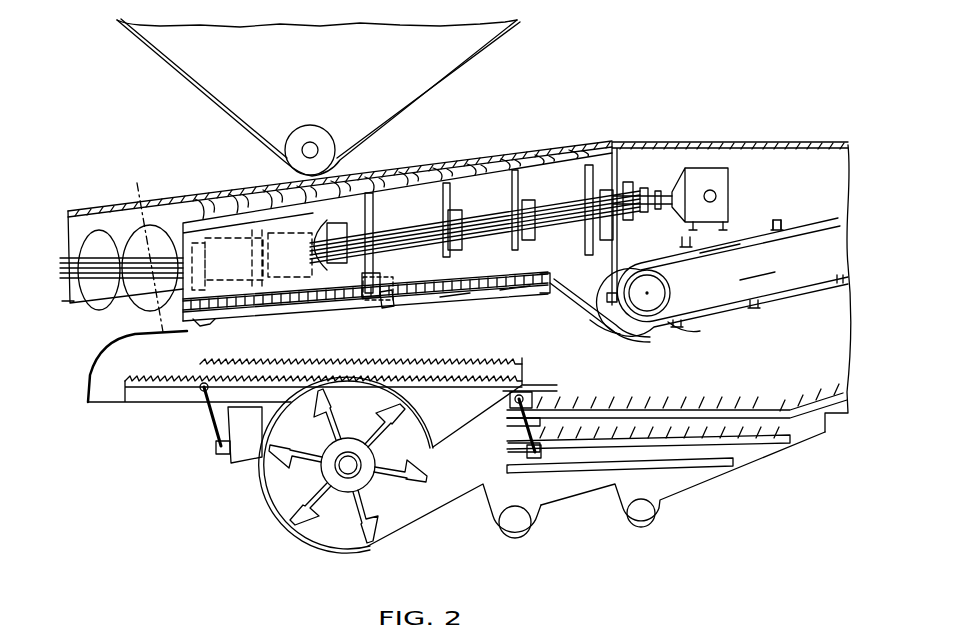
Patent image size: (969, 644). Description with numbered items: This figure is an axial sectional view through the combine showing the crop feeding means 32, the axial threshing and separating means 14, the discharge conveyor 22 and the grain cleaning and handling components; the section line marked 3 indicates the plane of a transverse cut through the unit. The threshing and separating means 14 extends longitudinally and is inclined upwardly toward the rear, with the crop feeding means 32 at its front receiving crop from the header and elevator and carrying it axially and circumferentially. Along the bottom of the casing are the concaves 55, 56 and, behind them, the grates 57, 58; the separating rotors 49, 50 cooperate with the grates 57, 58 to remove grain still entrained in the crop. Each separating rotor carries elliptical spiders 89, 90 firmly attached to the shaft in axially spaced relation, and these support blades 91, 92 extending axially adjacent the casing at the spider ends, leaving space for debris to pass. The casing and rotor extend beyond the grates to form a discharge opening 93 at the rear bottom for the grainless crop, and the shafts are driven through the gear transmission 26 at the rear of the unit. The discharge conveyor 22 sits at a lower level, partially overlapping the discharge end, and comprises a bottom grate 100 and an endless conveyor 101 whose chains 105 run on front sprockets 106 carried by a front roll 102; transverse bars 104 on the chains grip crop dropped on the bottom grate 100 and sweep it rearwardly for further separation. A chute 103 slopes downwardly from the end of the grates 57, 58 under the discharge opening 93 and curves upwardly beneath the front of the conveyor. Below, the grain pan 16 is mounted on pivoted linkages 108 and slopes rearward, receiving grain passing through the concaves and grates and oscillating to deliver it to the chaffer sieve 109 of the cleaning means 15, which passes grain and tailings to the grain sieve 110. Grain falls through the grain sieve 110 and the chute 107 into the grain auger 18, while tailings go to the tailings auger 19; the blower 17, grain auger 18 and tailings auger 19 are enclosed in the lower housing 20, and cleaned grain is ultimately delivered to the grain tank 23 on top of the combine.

The section line 3- 3 is at (180, 322).
The threshing and separating means 14 is at (546, 131).
The grain cleaning means 15 is at (697, 455).
The grain pan 16 is at (452, 364).
The blower 17 is at (328, 533).
The grain auger 18 is at (524, 540).
The tailings auger 19 is at (647, 527).
The lower housing 20 is at (413, 526).
The discharge conveyor 22 is at (802, 214).
The grain tank 23 is at (443, 66).
The gear transmission 26 is at (716, 174).
The crop feeding means 32 is at (74, 347).
The separating rotor 49 is at (367, 286).
The separating rotor 50 is at (430, 276).
The concave 55 is at (205, 323).
The concave 56 is at (255, 322).
The grate 57 is at (495, 290).
The grate 58 is at (514, 292).
The spider 89 is at (385, 268).
The spider 90 is at (448, 203).
The blade 91 is at (380, 293).
The blade 92 is at (572, 257).
The discharge opening 93 is at (596, 301).
The bottom grate 100 is at (783, 305).
The endless conveyor 101 is at (751, 285).
The front roll 102 is at (655, 305).
The chute 103 is at (580, 312).
The transverse bar 104 is at (776, 223).
The chain 105 is at (748, 240).
The front sprocket 106 is at (695, 310).
The chute 107 is at (684, 465).
The pivoted linkage 108 is at (518, 437).
The chaffer sieve 109 is at (766, 400).
The grain sieve 110 is at (785, 445).